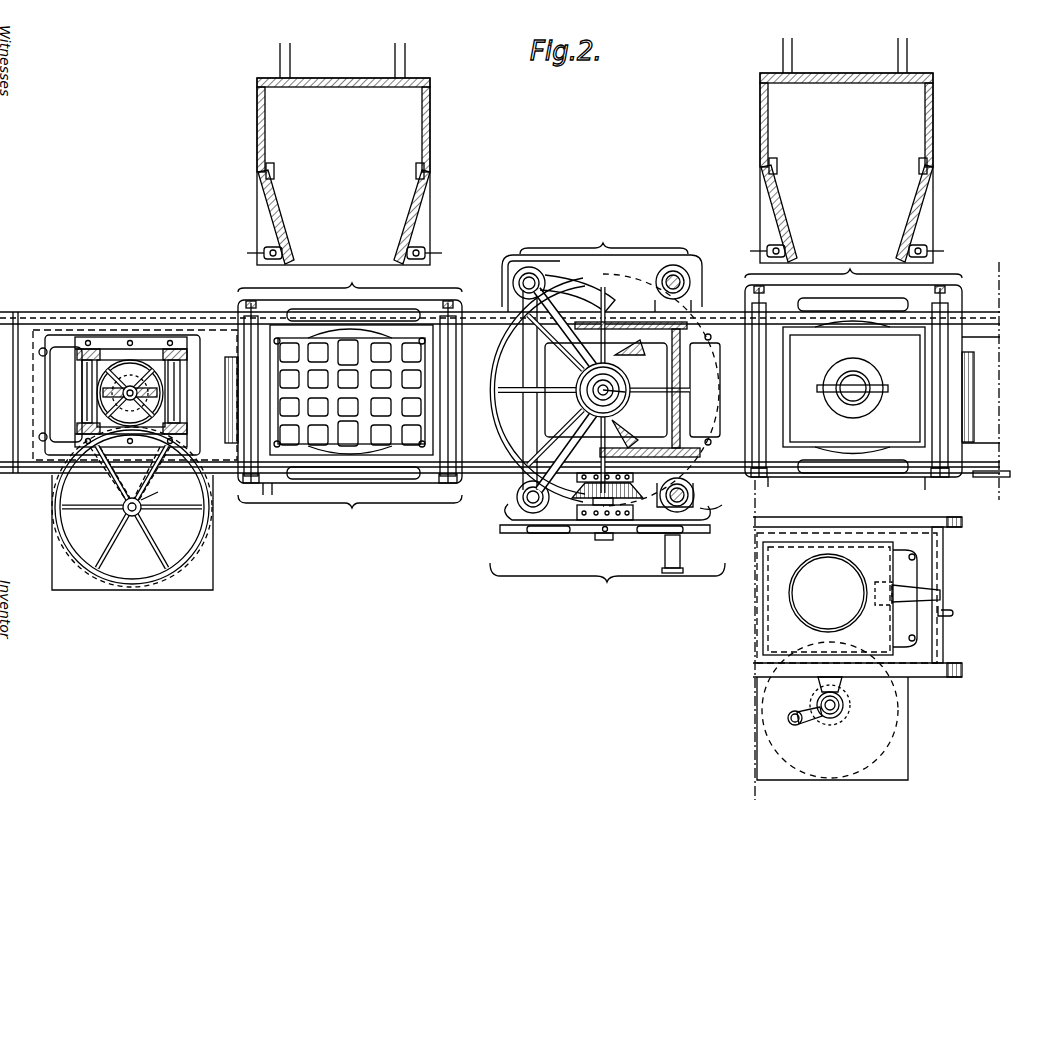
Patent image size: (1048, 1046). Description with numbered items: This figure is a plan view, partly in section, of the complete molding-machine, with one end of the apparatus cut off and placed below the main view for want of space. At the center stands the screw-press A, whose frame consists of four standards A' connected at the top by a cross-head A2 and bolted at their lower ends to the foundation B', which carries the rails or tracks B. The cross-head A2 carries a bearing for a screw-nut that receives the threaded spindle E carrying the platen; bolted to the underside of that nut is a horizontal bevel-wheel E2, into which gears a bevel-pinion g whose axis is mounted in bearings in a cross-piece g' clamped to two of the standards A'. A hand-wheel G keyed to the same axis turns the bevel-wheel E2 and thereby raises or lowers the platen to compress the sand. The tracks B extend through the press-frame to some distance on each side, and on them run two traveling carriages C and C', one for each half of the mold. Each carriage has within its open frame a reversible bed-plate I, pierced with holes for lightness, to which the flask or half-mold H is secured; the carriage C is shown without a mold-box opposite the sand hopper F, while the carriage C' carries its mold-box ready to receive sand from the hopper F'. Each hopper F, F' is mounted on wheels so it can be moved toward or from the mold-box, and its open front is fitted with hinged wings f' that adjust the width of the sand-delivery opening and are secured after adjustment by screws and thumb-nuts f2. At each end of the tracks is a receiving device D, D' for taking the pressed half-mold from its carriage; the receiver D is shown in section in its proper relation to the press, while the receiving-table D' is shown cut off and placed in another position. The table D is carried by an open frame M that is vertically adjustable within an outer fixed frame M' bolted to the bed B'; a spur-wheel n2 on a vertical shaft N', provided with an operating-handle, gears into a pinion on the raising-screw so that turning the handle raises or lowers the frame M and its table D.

The sand-supply box or hopper F is at (343, 154).
The sand-supply box or hopper F' is at (846, 150).
The hinged wings f' is at (595, 211).
The screws and thumb-nuts f2 is at (595, 251).
The rails or tracks B is at (506, 381).
The foundation B' is at (360, 392).
The receiving-table D is at (135, 395).
The receiving-table D' is at (859, 640).
The open frame M is at (131, 393).
The outer fixed frame M' is at (147, 388).
The vertical shaft N' is at (519, 630).
The spur-wheel n2 is at (132, 508).
The traveling carriage C is at (343, 396).
The traveling carriage C' is at (877, 375).
The bed-plate I is at (351, 390).
The flask or half-mold H is at (854, 387).
The press A is at (607, 412).
The standards A' is at (617, 382).
The cross-head A2 is at (596, 369).
The threaded spindle E is at (606, 390).
The horizontal bevel-wheel E2 is at (594, 390).
The hand-wheel G is at (622, 447).
The bevel-pinion g is at (600, 521).
The cross-piece g' is at (715, 508).